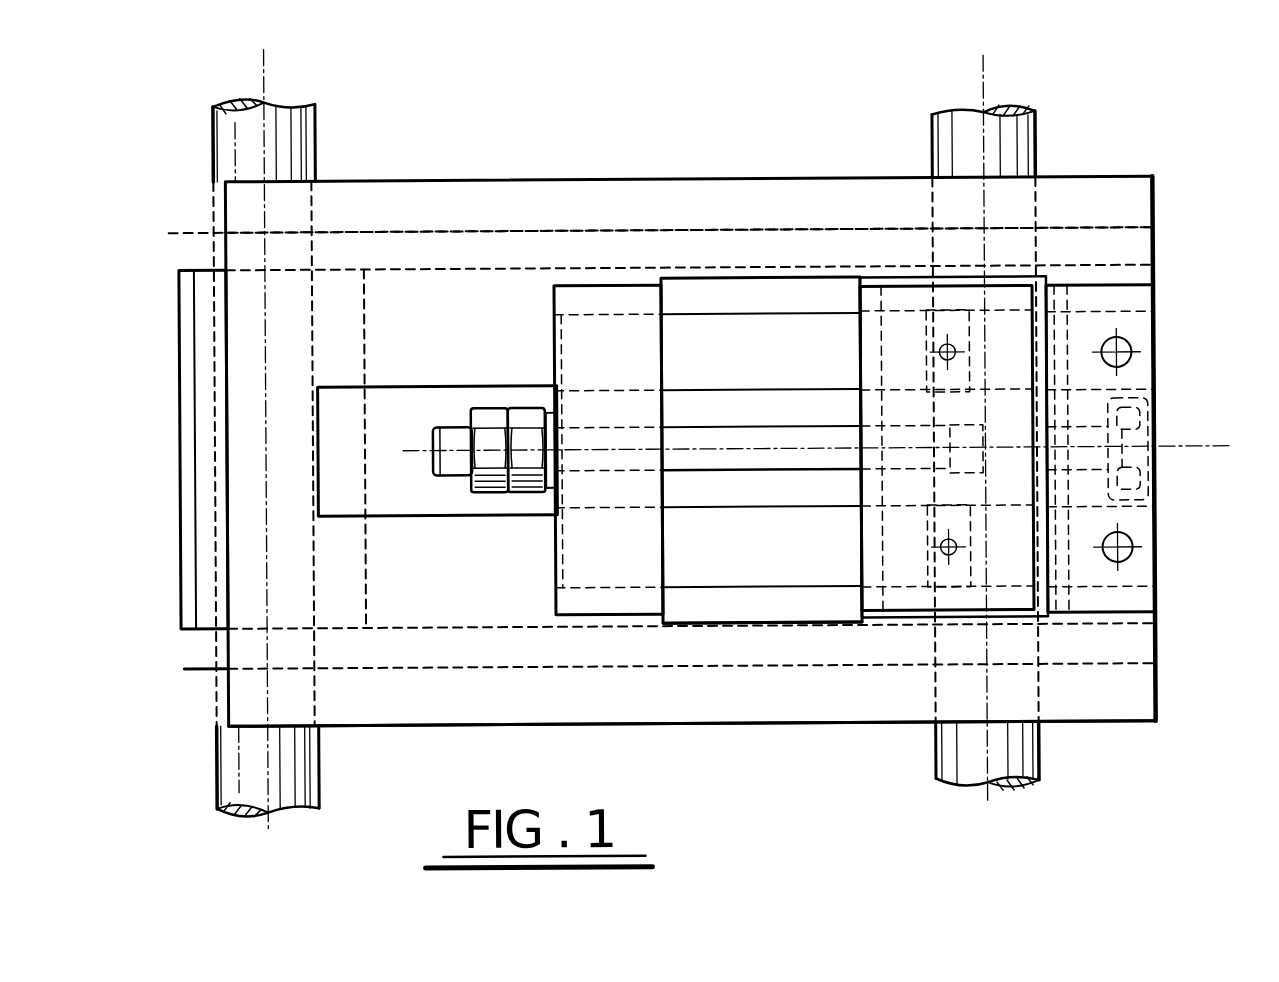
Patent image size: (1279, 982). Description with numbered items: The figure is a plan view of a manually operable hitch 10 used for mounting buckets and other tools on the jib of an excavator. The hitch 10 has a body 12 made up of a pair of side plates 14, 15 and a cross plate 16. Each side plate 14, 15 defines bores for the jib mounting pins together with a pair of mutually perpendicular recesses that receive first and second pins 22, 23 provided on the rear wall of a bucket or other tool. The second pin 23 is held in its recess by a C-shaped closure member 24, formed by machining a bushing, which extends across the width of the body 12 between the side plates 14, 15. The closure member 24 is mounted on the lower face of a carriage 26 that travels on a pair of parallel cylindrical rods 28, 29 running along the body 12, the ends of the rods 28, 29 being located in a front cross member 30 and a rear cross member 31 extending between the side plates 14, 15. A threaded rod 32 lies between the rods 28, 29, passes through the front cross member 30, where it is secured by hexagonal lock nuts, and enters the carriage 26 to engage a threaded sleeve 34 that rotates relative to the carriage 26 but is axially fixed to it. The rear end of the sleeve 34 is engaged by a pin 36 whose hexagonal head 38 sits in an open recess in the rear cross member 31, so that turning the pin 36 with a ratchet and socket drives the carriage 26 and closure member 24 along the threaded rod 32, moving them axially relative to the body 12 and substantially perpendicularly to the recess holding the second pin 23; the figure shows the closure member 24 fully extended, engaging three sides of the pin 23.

The hitch 10 is at (1149, 141).
The body 12 is at (1158, 206).
The side plate 14 is at (1158, 698).
The side plate 15 is at (1158, 223).
The cross plate 16 is at (474, 306).
The first pin 22 is at (287, 126).
The second pin 23 is at (964, 154).
The closure member 24 is at (921, 623).
The carriage 26 is at (861, 614).
The cylindrical rod 28 is at (771, 588).
The cylindrical rod 29 is at (808, 311).
The front cross member 30 is at (593, 284).
The rear cross member 31 is at (1159, 301).
The threaded rod 32 is at (773, 438).
The threaded sleeve 34 is at (1017, 422).
The pin 36 is at (1153, 518).
The hexagonal head 38 is at (1140, 468).